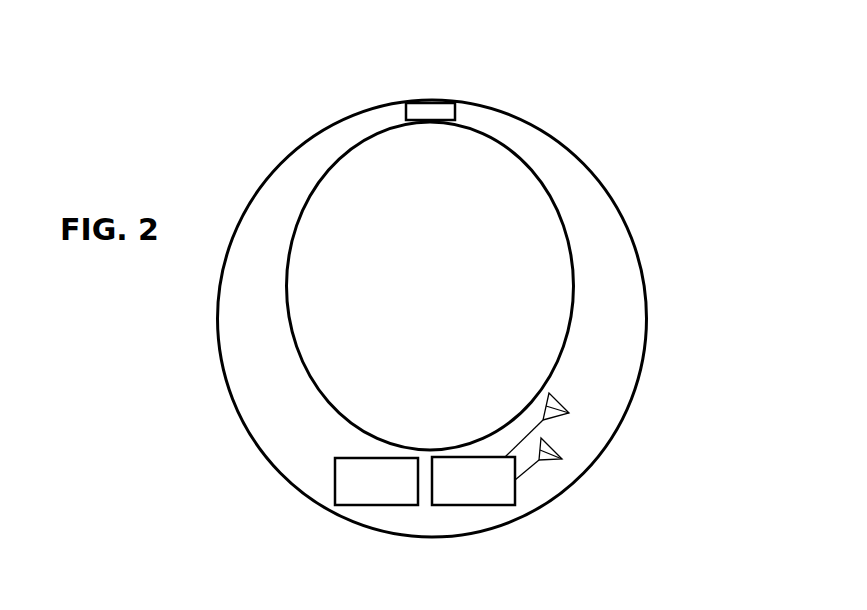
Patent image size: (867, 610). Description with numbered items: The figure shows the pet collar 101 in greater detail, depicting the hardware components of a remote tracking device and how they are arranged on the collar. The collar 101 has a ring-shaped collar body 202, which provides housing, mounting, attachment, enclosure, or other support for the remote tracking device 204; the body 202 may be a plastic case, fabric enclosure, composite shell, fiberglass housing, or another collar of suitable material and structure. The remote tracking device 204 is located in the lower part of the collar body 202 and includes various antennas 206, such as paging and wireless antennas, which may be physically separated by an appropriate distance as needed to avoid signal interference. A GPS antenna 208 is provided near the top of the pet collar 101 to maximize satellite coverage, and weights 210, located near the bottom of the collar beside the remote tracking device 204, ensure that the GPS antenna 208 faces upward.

The pet collar 101 is at (190, 132).
The collar body 202 is at (635, 235).
The remote tracking device 204 is at (473, 481).
The antennas 206 is at (573, 440).
The GPS antenna 208 is at (437, 112).
The weights 210 is at (376, 481).